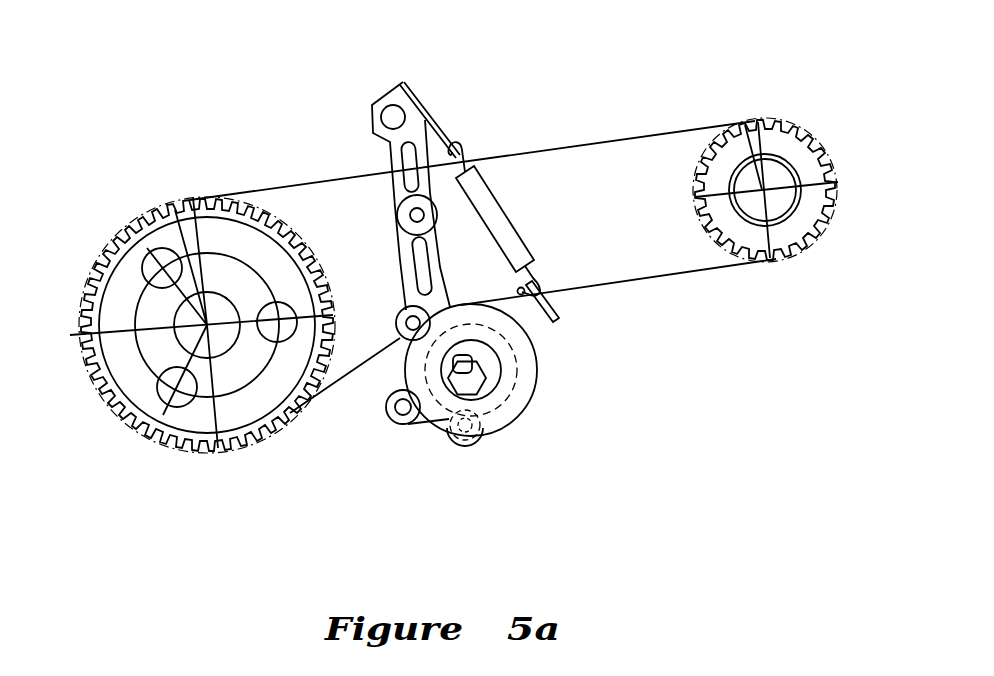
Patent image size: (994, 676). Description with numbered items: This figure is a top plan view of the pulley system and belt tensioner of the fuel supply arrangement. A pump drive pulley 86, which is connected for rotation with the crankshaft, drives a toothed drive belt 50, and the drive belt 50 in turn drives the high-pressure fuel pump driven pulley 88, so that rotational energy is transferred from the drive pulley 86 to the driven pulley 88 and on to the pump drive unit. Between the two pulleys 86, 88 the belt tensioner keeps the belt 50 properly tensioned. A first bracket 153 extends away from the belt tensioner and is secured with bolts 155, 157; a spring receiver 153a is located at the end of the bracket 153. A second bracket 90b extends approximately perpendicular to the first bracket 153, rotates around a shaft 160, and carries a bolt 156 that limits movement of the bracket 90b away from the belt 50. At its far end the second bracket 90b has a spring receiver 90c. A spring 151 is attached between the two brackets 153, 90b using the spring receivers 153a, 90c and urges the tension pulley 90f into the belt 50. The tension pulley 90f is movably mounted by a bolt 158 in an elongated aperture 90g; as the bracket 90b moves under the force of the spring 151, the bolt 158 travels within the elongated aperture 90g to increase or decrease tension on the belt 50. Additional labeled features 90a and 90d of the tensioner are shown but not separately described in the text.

The drive belt 50 is at (620, 138).
The pump drive pulley 86 is at (775, 123).
The high-pressure fuel pump driven pulley 88 is at (132, 227).
The idler pulley bearing 90a is at (507, 363).
The second bracket 90b is at (542, 345).
The spring receiver 90c is at (557, 312).
The bracket mounting hole 90d is at (387, 408).
The tension pulley 90f is at (543, 410).
The elongated aperture 90g is at (468, 355).
The spring 151 is at (500, 222).
The bracket 153 is at (384, 205).
The spring receiver 153a is at (430, 113).
The bolt 155 is at (388, 112).
The bolt 156 is at (460, 443).
The bolt 157 is at (404, 323).
The bolt 158 is at (505, 427).
The shaft 160 is at (403, 420).